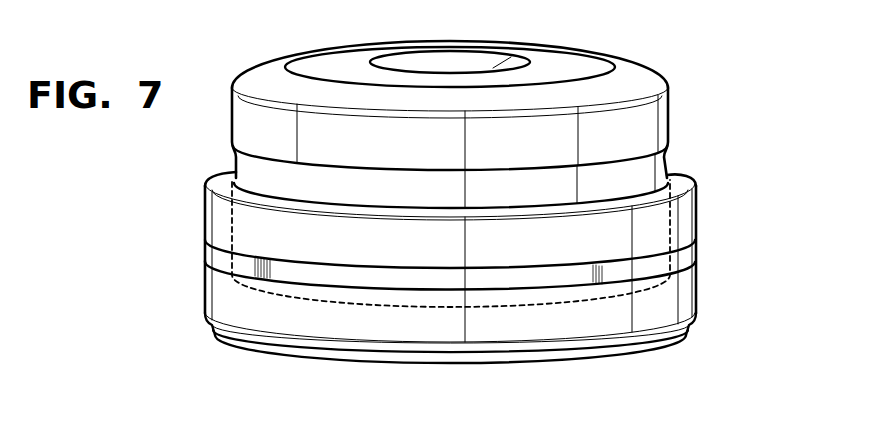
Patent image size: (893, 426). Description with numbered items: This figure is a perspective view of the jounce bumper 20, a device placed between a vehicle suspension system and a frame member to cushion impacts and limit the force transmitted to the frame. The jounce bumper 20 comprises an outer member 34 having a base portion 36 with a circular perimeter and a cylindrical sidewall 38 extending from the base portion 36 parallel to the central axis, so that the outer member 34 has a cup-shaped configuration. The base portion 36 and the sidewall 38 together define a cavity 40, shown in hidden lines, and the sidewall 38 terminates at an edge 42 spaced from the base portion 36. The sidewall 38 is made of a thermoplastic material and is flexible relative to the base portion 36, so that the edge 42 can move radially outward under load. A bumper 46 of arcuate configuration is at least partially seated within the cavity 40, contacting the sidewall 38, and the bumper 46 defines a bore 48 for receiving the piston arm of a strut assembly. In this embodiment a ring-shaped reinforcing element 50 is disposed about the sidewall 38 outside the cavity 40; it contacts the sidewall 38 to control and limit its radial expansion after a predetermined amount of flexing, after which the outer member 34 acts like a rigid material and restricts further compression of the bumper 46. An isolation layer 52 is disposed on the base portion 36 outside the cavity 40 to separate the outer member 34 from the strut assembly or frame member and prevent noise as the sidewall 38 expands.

The jounce bumper 20 is at (708, 138).
The outer member 34 is at (193, 284).
The base portion 36 is at (239, 351).
The sidewall 38 is at (216, 297).
The cavity 40 is at (228, 218).
The edge 42 is at (681, 183).
The bumper 46 is at (637, 77).
The bore 48 is at (495, 66).
The reinforcing element 50 is at (688, 252).
The isolation layer 52 is at (654, 342).